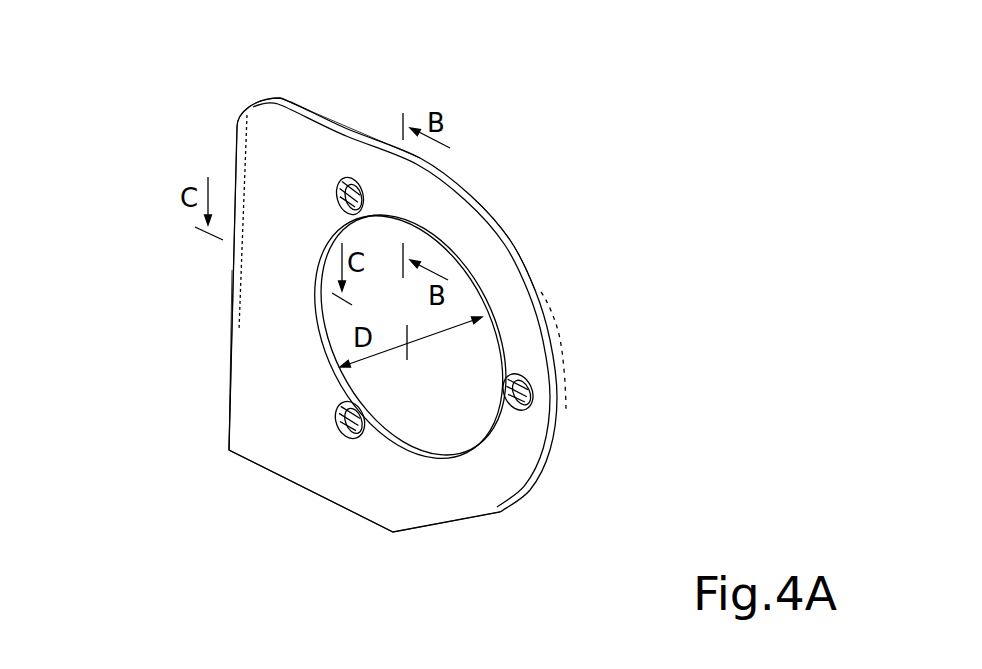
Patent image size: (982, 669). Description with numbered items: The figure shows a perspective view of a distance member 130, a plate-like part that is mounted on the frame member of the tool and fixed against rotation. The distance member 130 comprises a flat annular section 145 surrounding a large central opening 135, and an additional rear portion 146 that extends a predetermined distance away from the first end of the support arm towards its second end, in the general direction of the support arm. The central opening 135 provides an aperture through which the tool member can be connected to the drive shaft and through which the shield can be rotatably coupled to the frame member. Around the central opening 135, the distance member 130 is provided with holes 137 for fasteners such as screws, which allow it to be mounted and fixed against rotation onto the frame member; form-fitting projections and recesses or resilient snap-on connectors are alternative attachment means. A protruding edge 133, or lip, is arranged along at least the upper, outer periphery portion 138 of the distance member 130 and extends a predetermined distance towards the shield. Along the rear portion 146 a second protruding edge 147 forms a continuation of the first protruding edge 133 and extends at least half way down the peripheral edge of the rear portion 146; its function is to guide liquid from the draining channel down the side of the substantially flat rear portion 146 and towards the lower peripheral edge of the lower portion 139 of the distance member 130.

The distance member 130 is at (590, 136).
The protruding edge 133 is at (330, 108).
The central opening 135 is at (444, 444).
The holes 137 is at (336, 200).
The upper, outer periphery portion 138 is at (267, 122).
The lower portion 139 is at (368, 497).
The flat annular section 145 is at (475, 260).
The rear portion 146 is at (257, 373).
The second protruding edge 147 is at (216, 127).